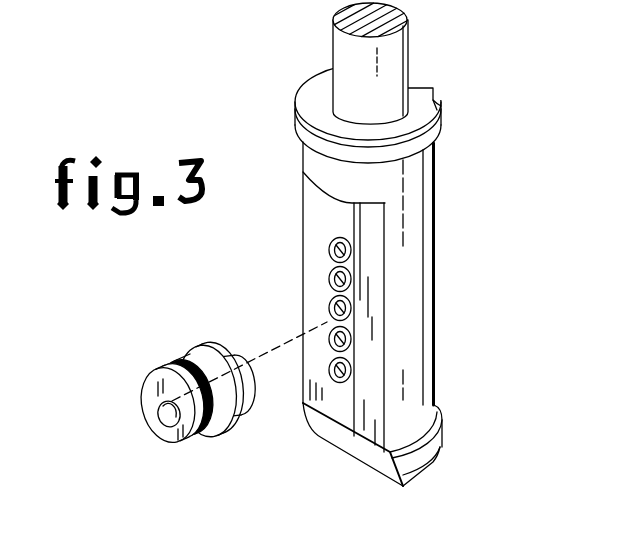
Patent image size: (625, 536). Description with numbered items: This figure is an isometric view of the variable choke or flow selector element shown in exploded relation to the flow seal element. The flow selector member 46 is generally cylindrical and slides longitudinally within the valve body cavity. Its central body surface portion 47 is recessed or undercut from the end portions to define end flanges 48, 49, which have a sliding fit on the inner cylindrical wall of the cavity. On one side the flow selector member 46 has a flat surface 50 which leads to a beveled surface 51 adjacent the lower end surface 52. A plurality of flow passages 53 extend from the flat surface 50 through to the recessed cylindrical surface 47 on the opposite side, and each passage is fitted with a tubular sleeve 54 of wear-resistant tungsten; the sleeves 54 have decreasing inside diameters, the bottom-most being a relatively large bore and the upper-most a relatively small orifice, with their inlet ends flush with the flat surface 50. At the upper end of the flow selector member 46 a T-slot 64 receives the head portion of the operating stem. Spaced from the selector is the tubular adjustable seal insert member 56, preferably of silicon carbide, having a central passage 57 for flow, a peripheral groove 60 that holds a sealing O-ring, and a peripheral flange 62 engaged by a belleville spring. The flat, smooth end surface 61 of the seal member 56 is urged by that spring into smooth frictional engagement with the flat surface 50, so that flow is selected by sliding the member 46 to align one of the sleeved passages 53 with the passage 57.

The flow selector member 46 is at (293, 167).
The central body surface portion 47 is at (429, 308).
The end flange 48 is at (430, 141).
The end flange 49 is at (440, 446).
The flat surface 50 is at (303, 283).
The beveled surface 51 is at (348, 438).
The lower end surface 52 is at (421, 479).
The flow passages 53 is at (352, 273).
The tubular sleeves 54 is at (329, 250).
The adjustable seal insert member 56 is at (151, 363).
The central passage 57 is at (170, 414).
The peripheral groove 60 is at (208, 440).
The end surface 61 is at (233, 352).
The peripheral flange 62 is at (240, 414).
The T-slot 64 is at (422, 89).